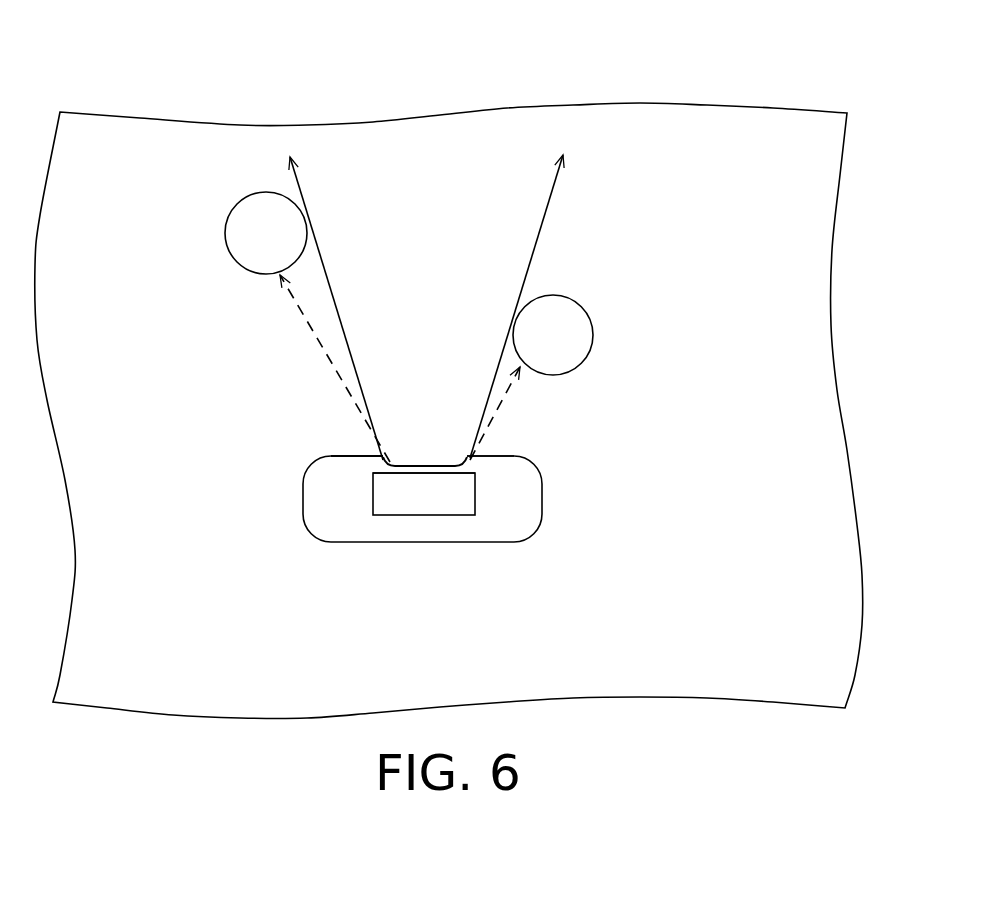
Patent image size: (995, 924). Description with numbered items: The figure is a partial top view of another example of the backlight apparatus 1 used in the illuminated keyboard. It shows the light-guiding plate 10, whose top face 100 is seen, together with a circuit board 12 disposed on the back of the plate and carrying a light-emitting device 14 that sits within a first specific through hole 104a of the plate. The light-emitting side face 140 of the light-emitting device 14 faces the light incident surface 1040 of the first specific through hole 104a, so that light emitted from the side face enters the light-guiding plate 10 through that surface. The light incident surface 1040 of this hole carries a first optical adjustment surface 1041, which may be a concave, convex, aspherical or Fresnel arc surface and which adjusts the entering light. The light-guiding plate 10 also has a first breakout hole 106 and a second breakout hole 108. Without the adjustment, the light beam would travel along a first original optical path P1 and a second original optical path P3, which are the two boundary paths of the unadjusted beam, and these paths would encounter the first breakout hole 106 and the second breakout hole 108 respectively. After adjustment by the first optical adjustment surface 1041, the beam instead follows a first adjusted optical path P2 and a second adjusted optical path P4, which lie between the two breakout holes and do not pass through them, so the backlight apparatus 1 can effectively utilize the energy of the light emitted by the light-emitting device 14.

The backlight apparatus 1 is at (450, 90).
The light-guiding plate 10 is at (693, 150).
The top face 100 is at (767, 627).
The first breakout hole 106 is at (226, 228).
The second breakout hole 108 is at (593, 333).
The circuit board 12 is at (498, 518).
The first specific through hole 104a is at (518, 482).
The light incident surface 1040 is at (343, 453).
The first optical adjustment surface 1041 is at (447, 453).
The light-emitting device 14 is at (432, 500).
The light-emitting side face 140 is at (408, 477).
The first original optical path P1 is at (310, 325).
The first adjusted optical path P2 is at (302, 190).
The second original optical path P3 is at (493, 420).
The second adjusted optical path P4 is at (547, 200).